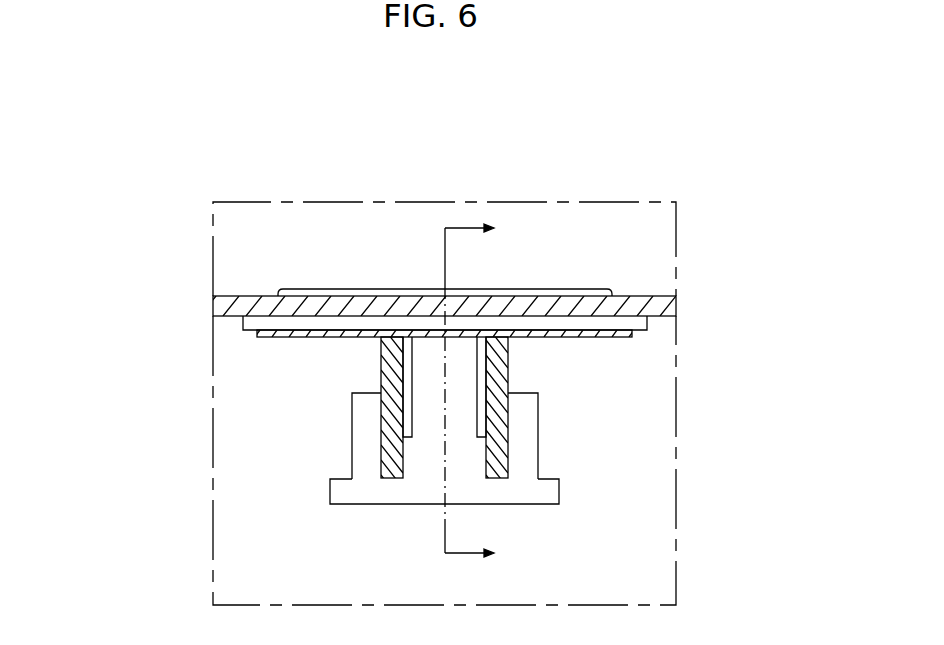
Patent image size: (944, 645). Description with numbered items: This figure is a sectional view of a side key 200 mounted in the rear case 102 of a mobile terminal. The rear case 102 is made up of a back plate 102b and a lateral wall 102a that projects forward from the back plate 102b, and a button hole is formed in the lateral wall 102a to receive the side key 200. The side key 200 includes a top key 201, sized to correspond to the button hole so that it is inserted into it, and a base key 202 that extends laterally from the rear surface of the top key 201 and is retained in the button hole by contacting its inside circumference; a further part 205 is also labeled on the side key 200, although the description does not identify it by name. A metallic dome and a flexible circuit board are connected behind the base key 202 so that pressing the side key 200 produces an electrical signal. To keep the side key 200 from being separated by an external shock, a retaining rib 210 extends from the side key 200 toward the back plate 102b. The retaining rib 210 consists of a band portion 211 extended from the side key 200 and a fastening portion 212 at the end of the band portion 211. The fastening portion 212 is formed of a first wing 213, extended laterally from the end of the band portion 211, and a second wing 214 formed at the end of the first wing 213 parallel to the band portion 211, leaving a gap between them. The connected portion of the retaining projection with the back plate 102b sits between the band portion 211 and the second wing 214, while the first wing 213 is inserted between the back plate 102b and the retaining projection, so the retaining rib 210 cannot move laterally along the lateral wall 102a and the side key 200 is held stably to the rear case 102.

The rear case 102 is at (805, 312).
The lateral wall 102a is at (662, 307).
The back plate 102b is at (653, 393).
The side key 200 is at (550, 107).
The top key 201 is at (427, 293).
The base key 202 is at (536, 327).
The sensor layer 205 is at (368, 337).
The retaining rib 210 is at (90, 432).
The band portion 211 is at (431, 399).
The fastening portion 212 is at (152, 482).
The first wing 213 is at (361, 491).
The second wing 214 is at (370, 450).